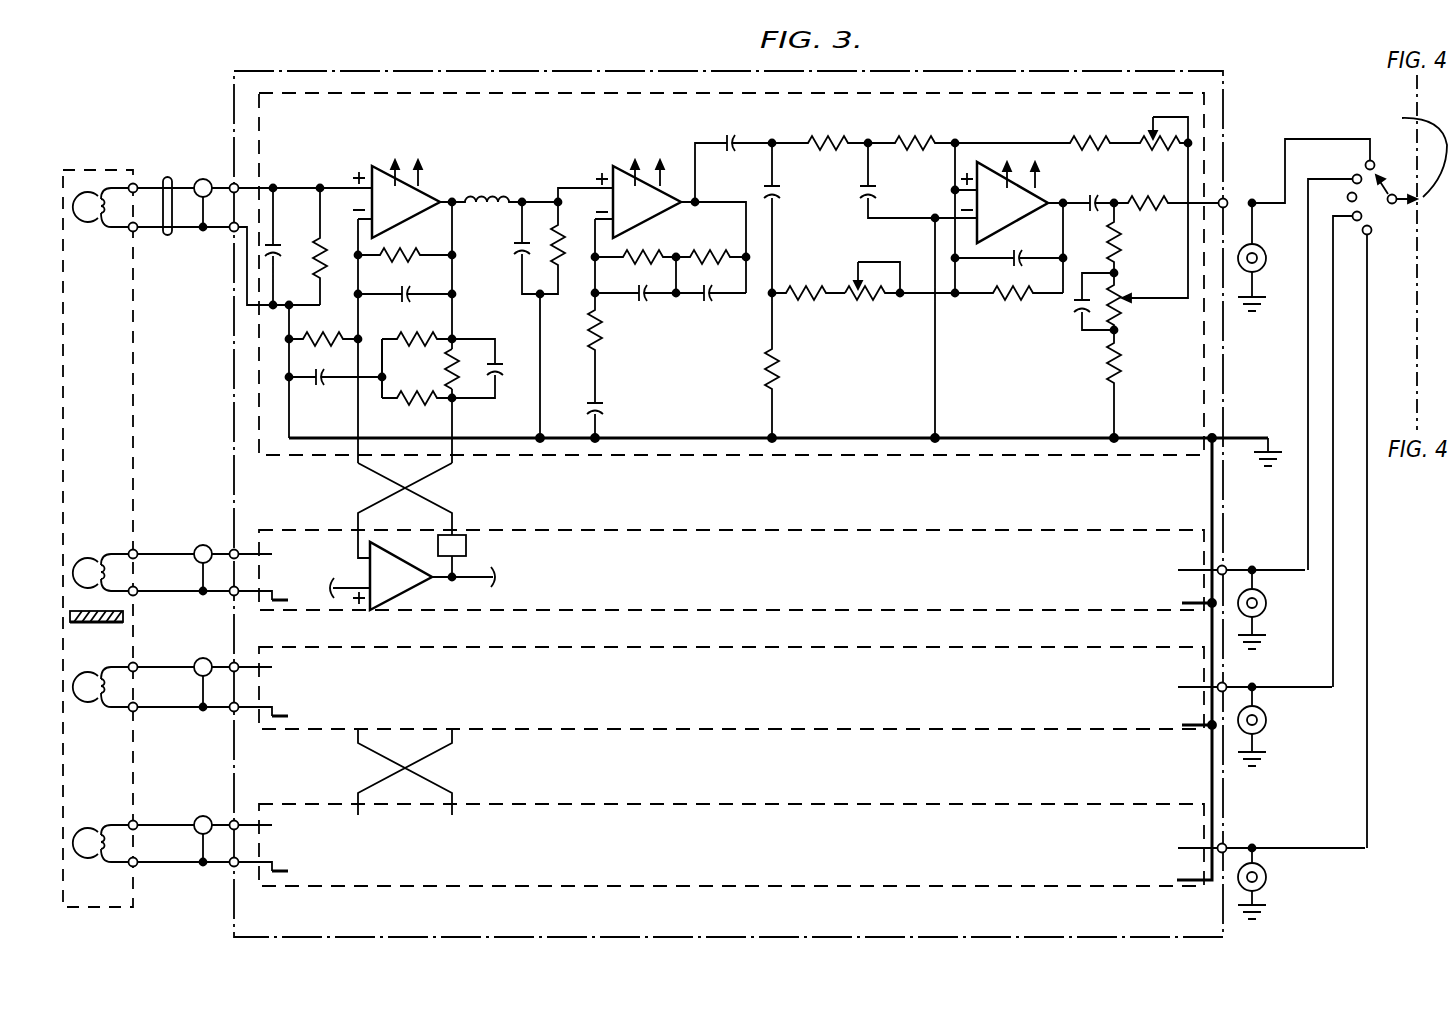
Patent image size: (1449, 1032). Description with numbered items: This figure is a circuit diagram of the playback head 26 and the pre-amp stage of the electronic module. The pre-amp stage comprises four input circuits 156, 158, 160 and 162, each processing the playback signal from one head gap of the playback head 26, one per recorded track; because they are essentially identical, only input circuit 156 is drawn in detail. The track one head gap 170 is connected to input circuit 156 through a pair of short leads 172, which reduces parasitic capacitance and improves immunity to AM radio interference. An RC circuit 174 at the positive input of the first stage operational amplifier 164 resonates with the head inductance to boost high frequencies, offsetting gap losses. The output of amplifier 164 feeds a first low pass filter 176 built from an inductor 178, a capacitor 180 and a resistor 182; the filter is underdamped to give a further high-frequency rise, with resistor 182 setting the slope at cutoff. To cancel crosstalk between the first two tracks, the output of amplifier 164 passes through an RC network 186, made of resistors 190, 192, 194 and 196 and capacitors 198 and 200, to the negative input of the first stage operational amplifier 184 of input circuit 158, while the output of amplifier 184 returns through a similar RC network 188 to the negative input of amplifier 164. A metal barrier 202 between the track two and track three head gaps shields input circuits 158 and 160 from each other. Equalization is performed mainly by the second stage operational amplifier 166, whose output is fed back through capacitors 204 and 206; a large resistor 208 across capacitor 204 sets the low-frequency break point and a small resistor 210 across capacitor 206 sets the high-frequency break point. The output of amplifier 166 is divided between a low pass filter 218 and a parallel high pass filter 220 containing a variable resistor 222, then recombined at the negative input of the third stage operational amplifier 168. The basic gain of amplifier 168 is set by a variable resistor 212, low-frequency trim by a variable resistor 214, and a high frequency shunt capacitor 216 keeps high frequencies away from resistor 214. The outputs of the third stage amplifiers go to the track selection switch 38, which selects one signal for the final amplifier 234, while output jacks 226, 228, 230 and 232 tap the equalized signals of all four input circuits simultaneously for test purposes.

The playback head 26 is at (112, 442).
The track selection switch 38 is at (1384, 218).
The input circuit 156 is at (525, 105).
The input circuit 158 is at (650, 538).
The input circuit 160 is at (683, 719).
The input circuit 162 is at (778, 817).
The first stage operational amplifier 164 is at (413, 216).
The second stage operational amplifier 166 is at (653, 216).
The third stage operational amplifier 168 is at (1017, 217).
The track one head gap 170 is at (93, 190).
The leads 172 is at (171, 237).
The RC circuit 174 is at (288, 246).
The first low pass filter 176 is at (522, 190).
The inductor 178 is at (478, 208).
The capacitor 180 is at (520, 258).
The resistor 182 is at (570, 264).
The first stage operational amplifier 184 is at (405, 587).
The RC network 186 is at (377, 400).
The RC network 188 is at (466, 548).
The resistor 190 is at (406, 329).
The resistor 192 is at (446, 372).
The resistor 194 is at (426, 402).
The resistor 196 is at (349, 330).
The capacitor 198 is at (503, 378).
The capacitor 200 is at (340, 369).
The metal barrier 202 is at (116, 627).
The capacitor 204 is at (700, 298).
The capacitor 206 is at (632, 298).
The resistor 208 is at (718, 237).
The resistor 210 is at (640, 235).
The variable resistor 212 is at (1151, 128).
The variable resistor 214 is at (1172, 300).
The high frequency shunt capacitor 216 is at (1078, 322).
The low pass filter 218 is at (837, 178).
The high pass filter 220 is at (818, 330).
The variable resistor 222 is at (895, 255).
The output jack 226 is at (1266, 258).
The output jack 228 is at (1266, 603).
The output jack 230 is at (1266, 720).
The output jack 232 is at (1266, 877).
The final amplifier 234 is at (1341, 139).